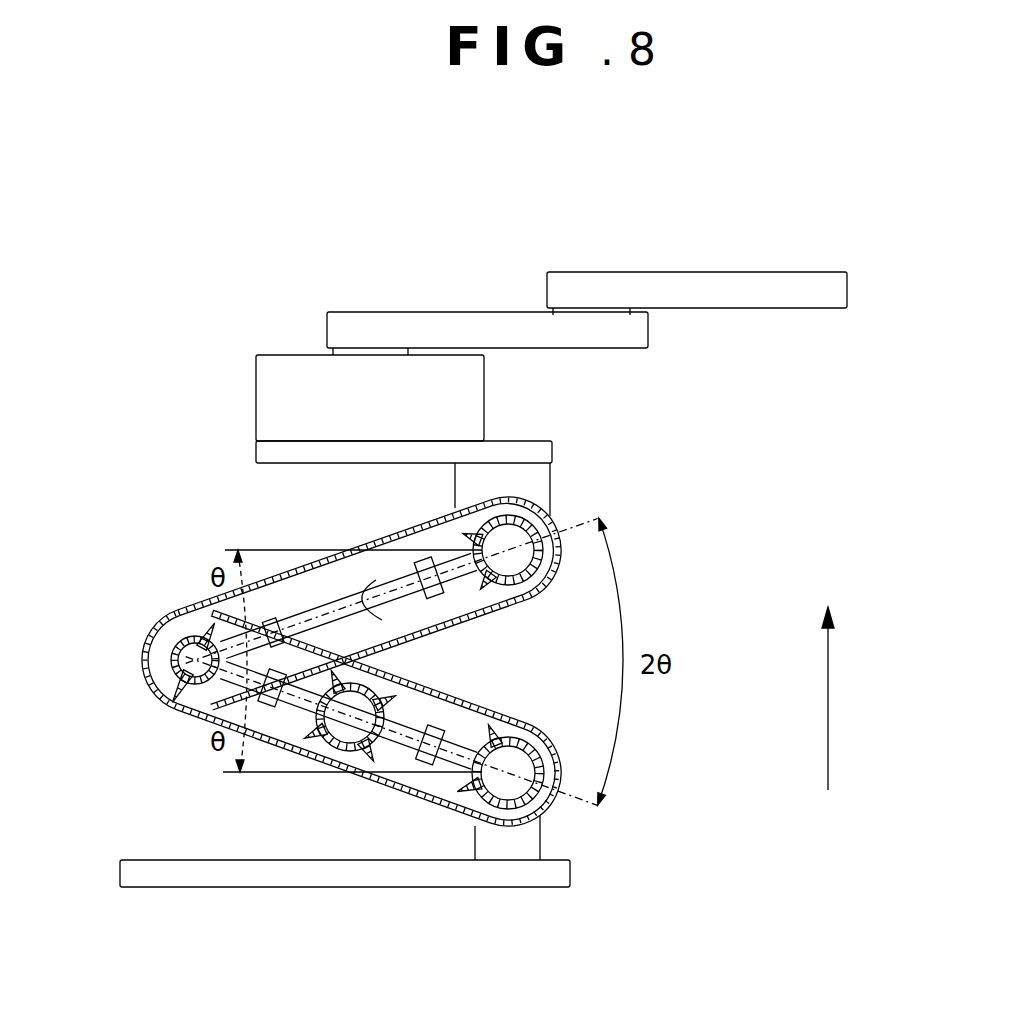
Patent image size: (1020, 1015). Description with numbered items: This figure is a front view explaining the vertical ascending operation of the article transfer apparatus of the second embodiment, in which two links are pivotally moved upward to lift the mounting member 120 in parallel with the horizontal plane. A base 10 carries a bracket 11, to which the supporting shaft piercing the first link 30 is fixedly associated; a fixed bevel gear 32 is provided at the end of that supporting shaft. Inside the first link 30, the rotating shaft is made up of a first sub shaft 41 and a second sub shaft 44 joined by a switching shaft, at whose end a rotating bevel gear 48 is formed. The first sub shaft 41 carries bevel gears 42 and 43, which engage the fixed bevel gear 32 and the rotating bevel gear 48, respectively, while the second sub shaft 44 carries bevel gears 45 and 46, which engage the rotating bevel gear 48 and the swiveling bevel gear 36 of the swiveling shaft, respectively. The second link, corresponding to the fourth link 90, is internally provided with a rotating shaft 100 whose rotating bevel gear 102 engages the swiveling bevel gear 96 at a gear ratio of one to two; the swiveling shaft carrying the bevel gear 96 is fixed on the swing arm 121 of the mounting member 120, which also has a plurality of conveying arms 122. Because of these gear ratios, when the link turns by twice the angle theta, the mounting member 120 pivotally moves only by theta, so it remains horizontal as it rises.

The base 10 is at (118, 878).
The bracket 11 is at (540, 857).
The first link 30 is at (555, 746).
The fixed bevel gear 32 is at (543, 794).
The swiveling bevel gear 36 is at (170, 658).
The first sub shaft 41 is at (413, 725).
The bevel gear 42 is at (490, 723).
The bevel gear 43 is at (398, 706).
The second sub shaft 44 is at (213, 718).
The bevel gear 45 is at (312, 733).
The bevel gear 46 is at (205, 695).
The rotating bevel gear 48 is at (337, 753).
The fourth link 90 is at (553, 583).
The swiveling bevel gear 96 is at (525, 587).
The rotating shaft 100 is at (303, 607).
The rotating bevel gear 102 is at (486, 584).
The mounting member 120 is at (703, 408).
The swing arm 121 is at (268, 452).
The conveying arms 122 is at (571, 278).